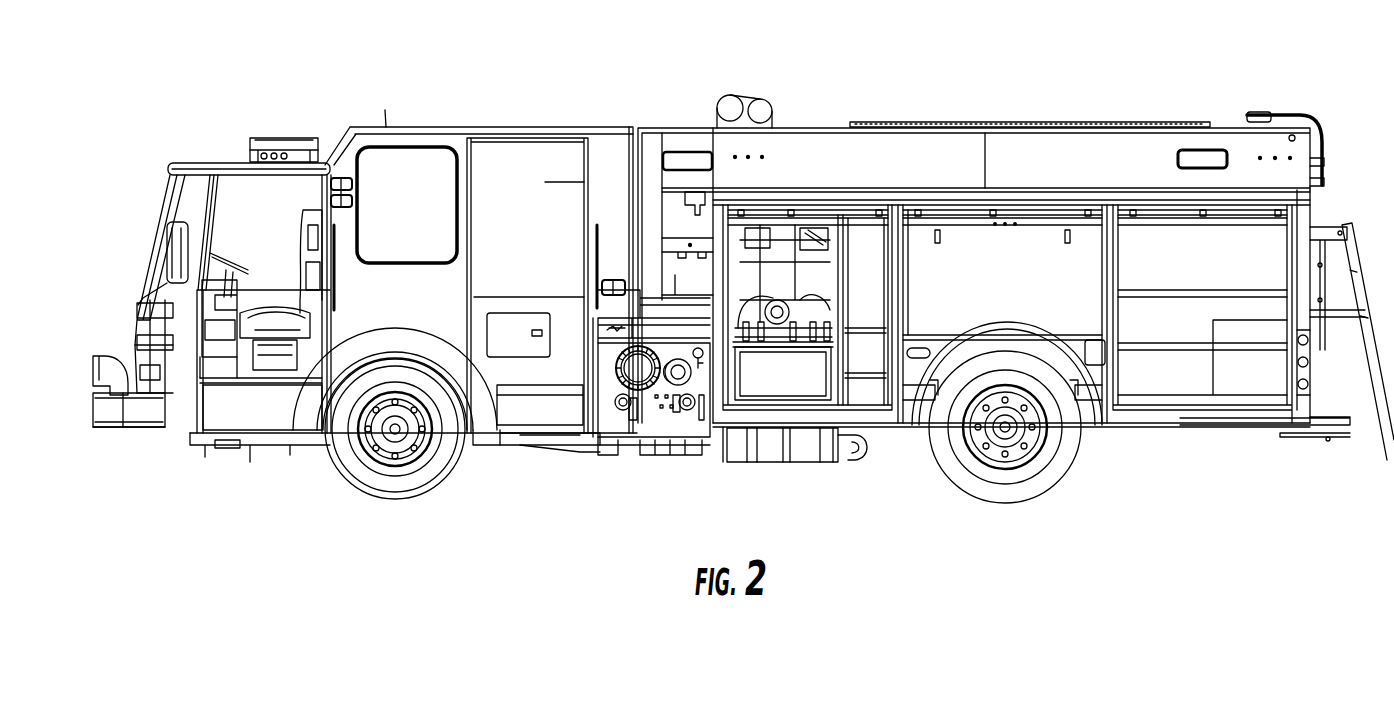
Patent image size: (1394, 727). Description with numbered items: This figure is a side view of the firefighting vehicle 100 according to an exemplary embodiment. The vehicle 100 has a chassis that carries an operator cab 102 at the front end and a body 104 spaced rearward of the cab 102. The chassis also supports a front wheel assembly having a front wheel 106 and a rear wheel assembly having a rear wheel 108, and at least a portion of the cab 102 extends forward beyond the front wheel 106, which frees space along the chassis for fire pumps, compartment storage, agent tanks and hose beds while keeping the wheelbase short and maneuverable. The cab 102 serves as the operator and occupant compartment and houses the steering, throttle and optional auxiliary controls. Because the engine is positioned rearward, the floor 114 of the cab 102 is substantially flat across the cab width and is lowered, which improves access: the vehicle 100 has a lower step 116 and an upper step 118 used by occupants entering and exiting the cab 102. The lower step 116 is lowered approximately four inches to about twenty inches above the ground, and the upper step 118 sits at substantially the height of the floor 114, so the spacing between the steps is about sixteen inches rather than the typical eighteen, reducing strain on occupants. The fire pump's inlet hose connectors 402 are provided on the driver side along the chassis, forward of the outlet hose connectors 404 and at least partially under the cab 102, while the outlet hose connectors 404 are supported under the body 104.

The vehicle 100 is at (600, 46).
The operator cab 102 is at (388, 126).
The body 104 is at (1117, 122).
The front wheel 106 is at (400, 499).
The rear wheel 108 is at (990, 487).
The floor 114 is at (215, 350).
The lower step 116 is at (228, 445).
The upper step 118 is at (215, 350).
The inlet hose connectors 402 is at (633, 372).
The outlet hose connectors 404 is at (678, 390).